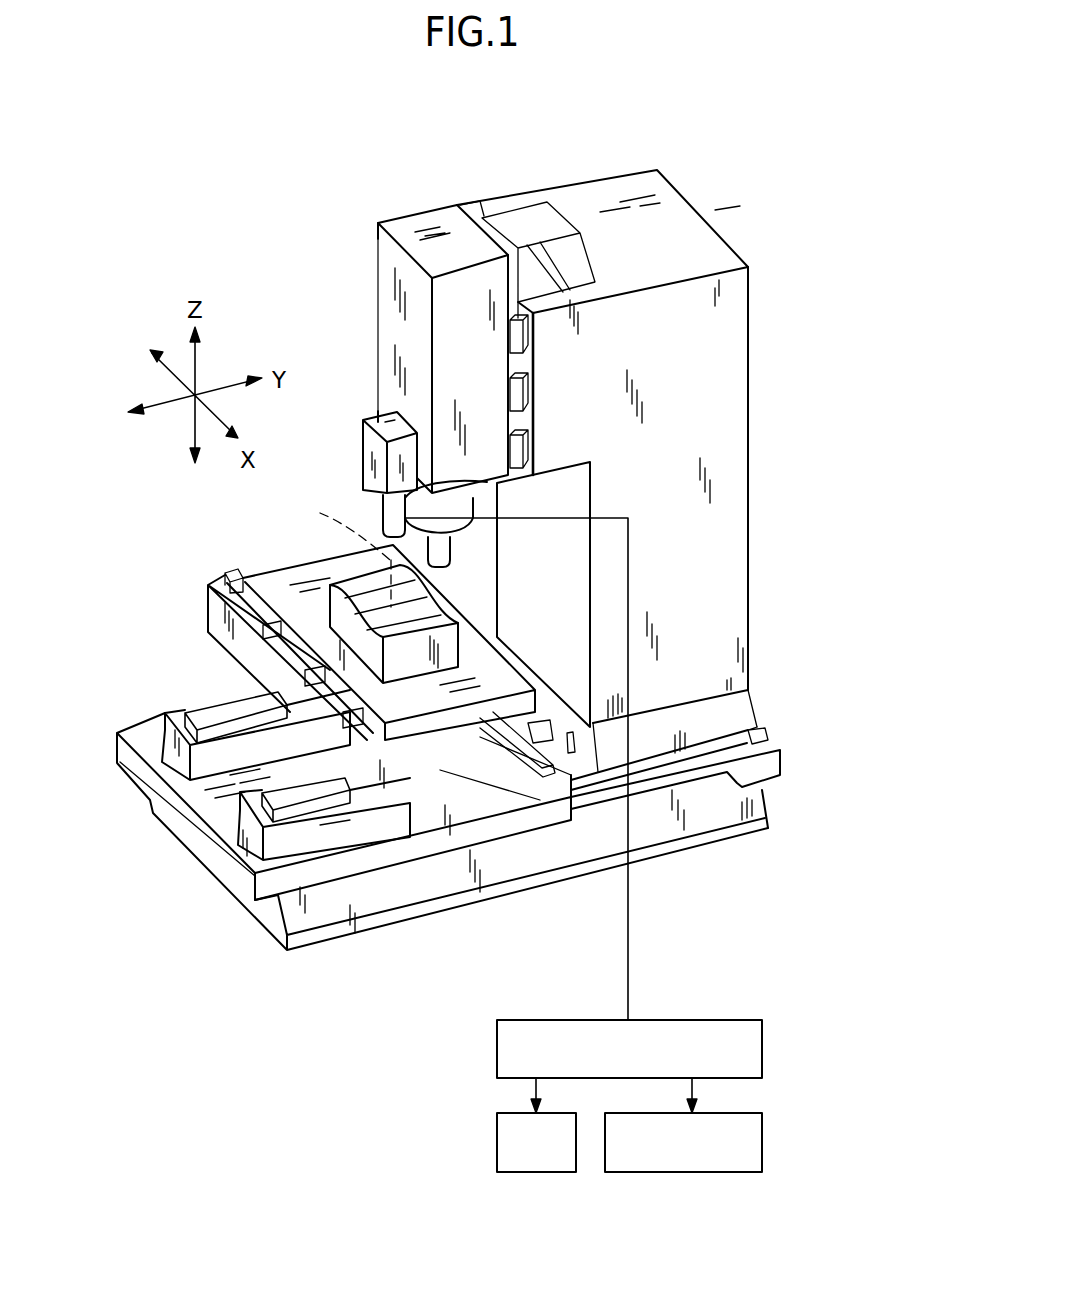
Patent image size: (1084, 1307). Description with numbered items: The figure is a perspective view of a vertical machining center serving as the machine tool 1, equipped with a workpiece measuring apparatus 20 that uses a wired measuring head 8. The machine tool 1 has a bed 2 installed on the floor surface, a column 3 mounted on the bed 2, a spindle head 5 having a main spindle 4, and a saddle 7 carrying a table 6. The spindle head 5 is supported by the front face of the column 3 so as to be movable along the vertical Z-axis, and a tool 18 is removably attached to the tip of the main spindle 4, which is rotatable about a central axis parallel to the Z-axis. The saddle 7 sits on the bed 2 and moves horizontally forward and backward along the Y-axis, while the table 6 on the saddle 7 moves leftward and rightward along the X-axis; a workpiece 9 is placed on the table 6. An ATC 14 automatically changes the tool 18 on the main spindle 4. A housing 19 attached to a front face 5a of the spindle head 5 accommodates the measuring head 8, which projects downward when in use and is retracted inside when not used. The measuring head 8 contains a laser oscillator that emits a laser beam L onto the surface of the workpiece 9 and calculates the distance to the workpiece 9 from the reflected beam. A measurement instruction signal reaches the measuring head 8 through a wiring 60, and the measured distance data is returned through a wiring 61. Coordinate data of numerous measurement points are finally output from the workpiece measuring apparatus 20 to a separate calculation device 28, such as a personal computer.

The machine tool 1 is at (763, 482).
The bed 2 is at (657, 863).
The column 3 is at (750, 355).
The main spindle 4 is at (480, 498).
The spindle head 5 is at (378, 280).
The front face of the spindle head 5a is at (395, 320).
The table 6 is at (453, 730).
The saddle 7 is at (497, 840).
The measuring head 8 is at (380, 510).
The workpiece 9 is at (330, 605).
The ATC (Automatic Tool Changer) 14 is at (497, 1135).
The tool 18 is at (455, 550).
The housing 19 is at (362, 445).
The workpiece measuring apparatus 20 is at (737, 1020).
The calculation device 28 is at (763, 1140).
The wiring 60 is at (571, 741).
The wiring 61 is at (630, 597).
The laser beam L is at (342, 555).